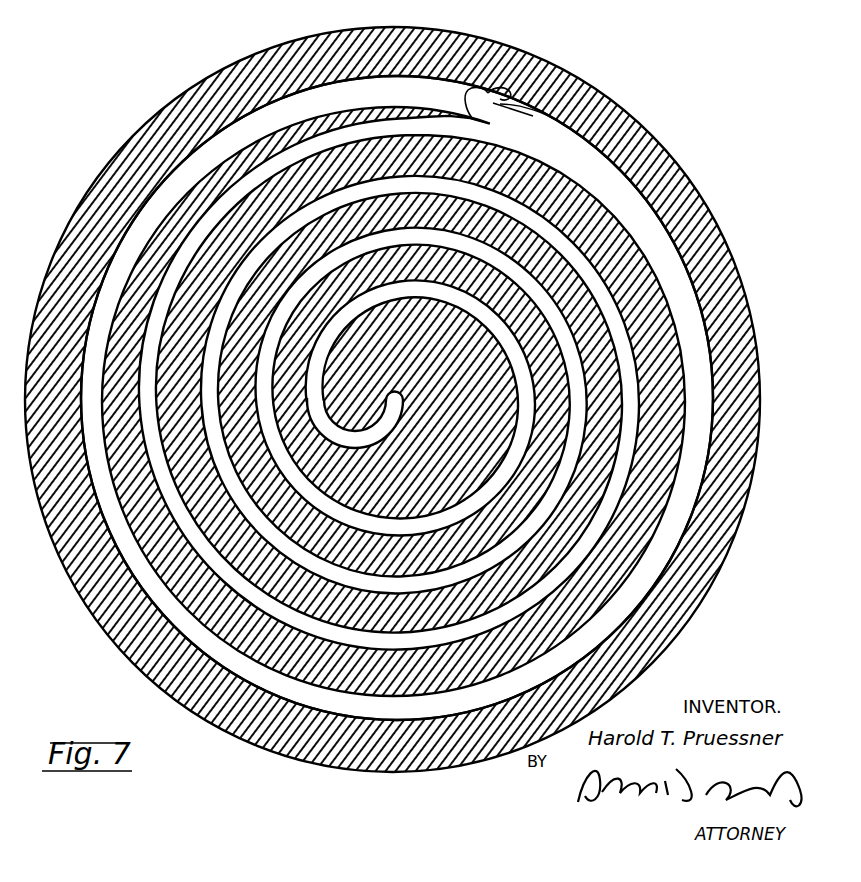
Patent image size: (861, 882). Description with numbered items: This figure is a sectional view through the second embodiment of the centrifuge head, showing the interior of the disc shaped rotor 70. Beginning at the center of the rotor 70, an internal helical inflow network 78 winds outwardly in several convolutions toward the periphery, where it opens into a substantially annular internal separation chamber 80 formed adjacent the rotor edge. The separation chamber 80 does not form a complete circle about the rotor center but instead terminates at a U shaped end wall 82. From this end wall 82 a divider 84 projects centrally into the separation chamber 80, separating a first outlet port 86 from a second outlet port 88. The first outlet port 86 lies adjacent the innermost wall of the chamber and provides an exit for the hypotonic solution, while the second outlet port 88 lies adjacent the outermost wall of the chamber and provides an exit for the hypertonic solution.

The rotor 70 is at (724, 245).
The inflow network 78 is at (524, 424).
The separation chamber 80 is at (696, 423).
The end wall 82 is at (516, 96).
The divider 84 is at (470, 91).
The first outlet port 86 is at (474, 126).
The second outlet port 88 is at (513, 88).